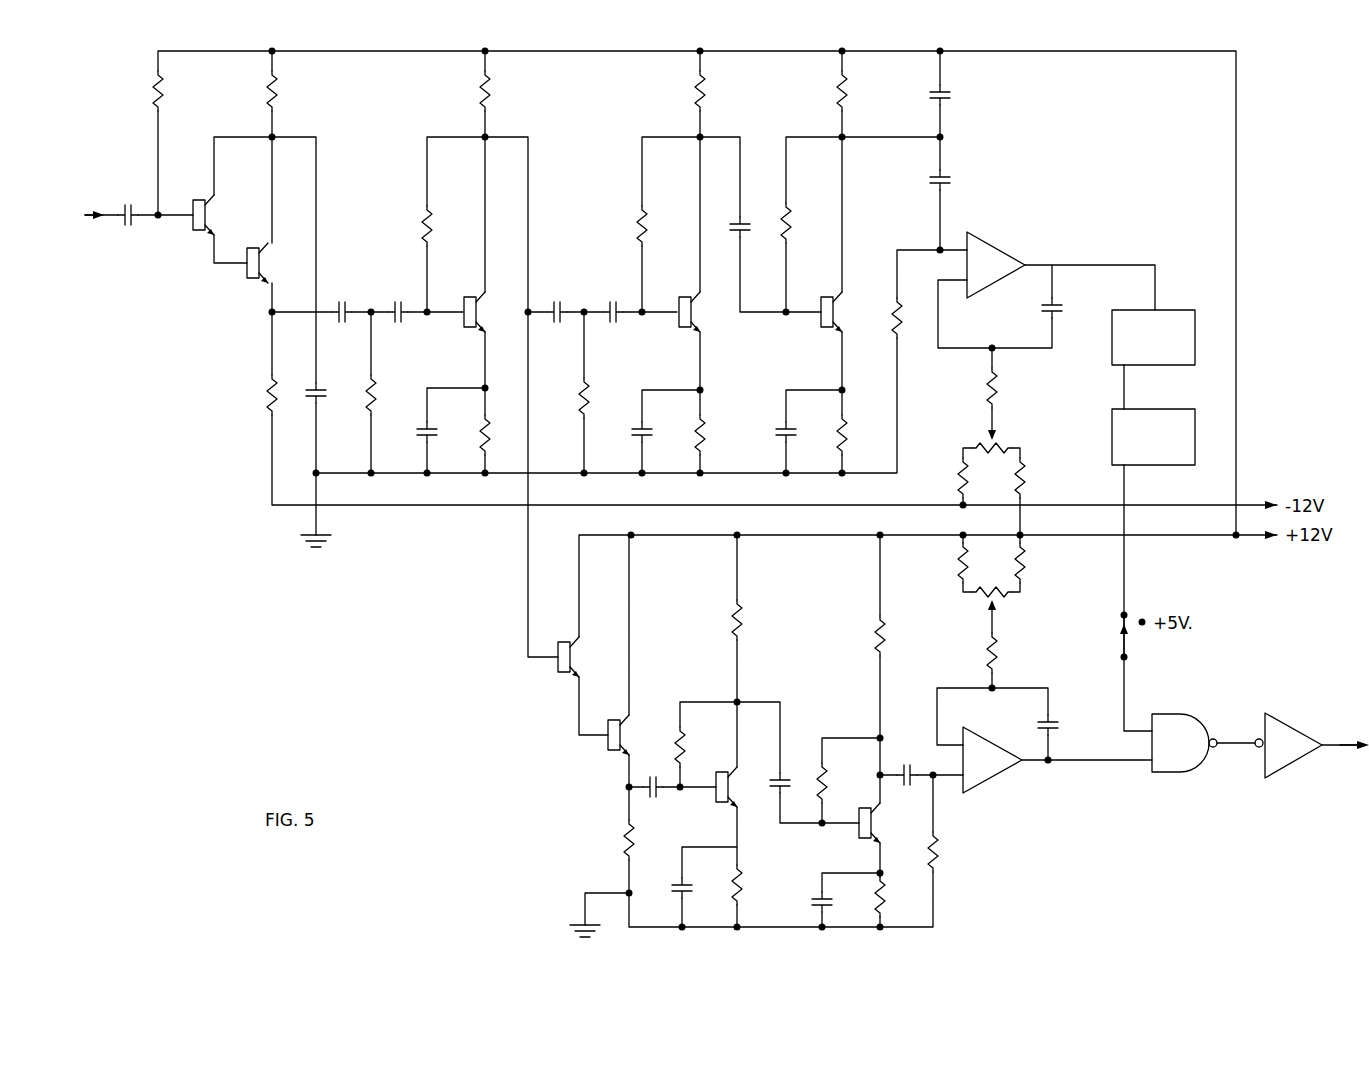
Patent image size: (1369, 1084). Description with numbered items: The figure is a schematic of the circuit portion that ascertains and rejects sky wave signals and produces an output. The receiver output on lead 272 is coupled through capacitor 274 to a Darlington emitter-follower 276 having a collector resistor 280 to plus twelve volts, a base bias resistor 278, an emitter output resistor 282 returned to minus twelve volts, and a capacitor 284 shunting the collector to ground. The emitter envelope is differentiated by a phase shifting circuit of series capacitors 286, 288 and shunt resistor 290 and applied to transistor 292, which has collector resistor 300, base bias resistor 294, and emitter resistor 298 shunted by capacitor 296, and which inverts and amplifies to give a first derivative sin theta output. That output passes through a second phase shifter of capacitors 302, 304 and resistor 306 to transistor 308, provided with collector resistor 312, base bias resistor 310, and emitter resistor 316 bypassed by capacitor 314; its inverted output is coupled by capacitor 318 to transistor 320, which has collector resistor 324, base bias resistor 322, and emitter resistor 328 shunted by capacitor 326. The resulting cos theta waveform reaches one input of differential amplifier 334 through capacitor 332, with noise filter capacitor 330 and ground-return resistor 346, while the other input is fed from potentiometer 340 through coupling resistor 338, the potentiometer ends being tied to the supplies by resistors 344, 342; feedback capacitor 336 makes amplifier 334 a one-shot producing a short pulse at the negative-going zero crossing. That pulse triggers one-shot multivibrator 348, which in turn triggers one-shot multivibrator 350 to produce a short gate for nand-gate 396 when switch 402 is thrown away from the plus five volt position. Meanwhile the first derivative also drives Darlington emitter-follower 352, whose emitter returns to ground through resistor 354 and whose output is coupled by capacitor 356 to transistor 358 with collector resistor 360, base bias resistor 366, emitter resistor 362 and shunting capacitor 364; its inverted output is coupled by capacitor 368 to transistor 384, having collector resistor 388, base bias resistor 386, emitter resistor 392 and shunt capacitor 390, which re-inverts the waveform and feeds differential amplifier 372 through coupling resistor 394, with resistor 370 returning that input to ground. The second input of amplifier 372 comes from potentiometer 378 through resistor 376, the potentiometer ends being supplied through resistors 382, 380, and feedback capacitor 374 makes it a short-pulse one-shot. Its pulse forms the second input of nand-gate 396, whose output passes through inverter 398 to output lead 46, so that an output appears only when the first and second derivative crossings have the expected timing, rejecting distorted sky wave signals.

The lead 272 is at (92, 205).
The capacitor 274 is at (138, 228).
The Darlington emitter-follower 276 is at (252, 246).
The base bias resistor 278 is at (152, 94).
The collector resistor 280 is at (279, 92).
The emitter output resistor 282 is at (266, 397).
The capacitor 284 is at (320, 388).
The capacitor 286 is at (338, 307).
The capacitor 288 is at (393, 307).
The resistor 290 is at (378, 394).
The transistor 292 is at (480, 332).
The base bias resistor 294 is at (421, 224).
The capacitor 296 is at (432, 428).
The emitter resistor 298 is at (480, 440).
The collector resistor 300 is at (480, 94).
The capacitor 302 is at (552, 307).
The capacitor 304 is at (608, 307).
The resistor 306 is at (590, 395).
The transistor 308 is at (695, 332).
The base bias resistor 310 is at (637, 226).
The collector resistor 312 is at (695, 94).
The bypass capacitor 314 is at (647, 428).
The emitter resistor 316 is at (704, 433).
The capacitor 318 is at (744, 222).
The transistor 320 is at (830, 332).
The base bias resistor 322 is at (791, 218).
The collector resistor 324 is at (837, 96).
The capacitor 326 is at (782, 440).
The emitter resistor 328 is at (837, 434).
The capacitor 330 is at (952, 95).
The capacitor 332 is at (952, 178).
The differential amplifier 334 is at (1005, 246).
The feedback capacitor 336 is at (1045, 312).
The coupling resistor 338 is at (1000, 392).
The potentiometer 340 is at (1003, 446).
The resistor 342 is at (958, 480).
The resistor 344 is at (1027, 482).
The resistor 346 is at (892, 320).
The one-shot multivibrator 348 is at (1170, 308).
The one-shot multivibrator 350 is at (1170, 407).
The Darlington emitter-follower 352 is at (610, 718).
The resistor 354 is at (624, 842).
The capacitor 356 is at (656, 772).
The transistor 358 is at (718, 805).
The collector resistor 360 is at (731, 625).
The emitter resistor 362 is at (743, 886).
The emitter resistor shunting capacitor 364 is at (678, 878).
The base bias resistor 366 is at (686, 742).
The capacitor 368 is at (786, 770).
The resistor 370 is at (939, 852).
The differential amplifier 372 is at (990, 788).
The feedback capacitor 374 is at (1056, 722).
The resistor 376 is at (1000, 654).
The potentiometer 378 is at (1002, 600).
The resistor 380 is at (958, 566).
The resistor 382 is at (1027, 572).
The transistor 384 is at (855, 838).
The base bias resistor 386 is at (820, 762).
The resistor 388 is at (874, 636).
The capacitor 390 is at (816, 904).
The emitter resistor 392 is at (884, 905).
The coupling resistor 394 is at (910, 762).
The nand-gate 396 is at (1176, 712).
The inverter 398 is at (1295, 725).
The switch 402 is at (1120, 630).
The output lead 46 is at (1346, 752).